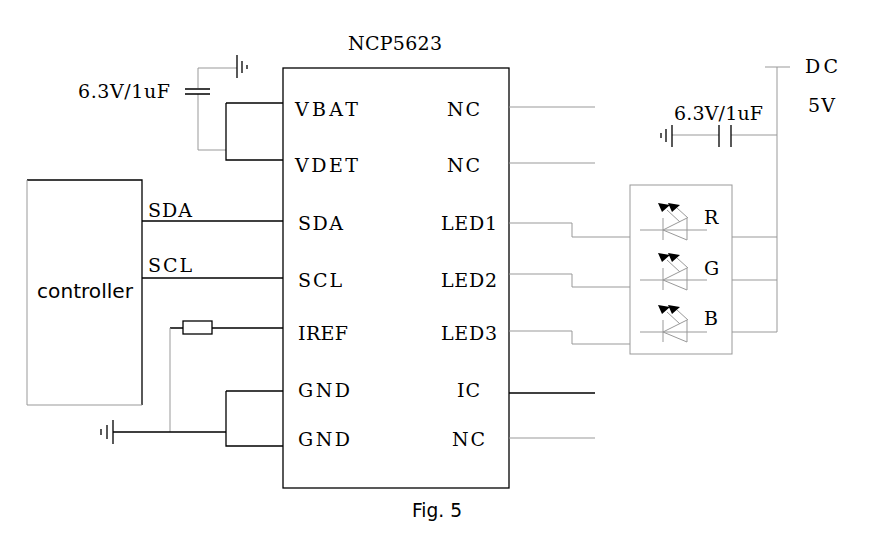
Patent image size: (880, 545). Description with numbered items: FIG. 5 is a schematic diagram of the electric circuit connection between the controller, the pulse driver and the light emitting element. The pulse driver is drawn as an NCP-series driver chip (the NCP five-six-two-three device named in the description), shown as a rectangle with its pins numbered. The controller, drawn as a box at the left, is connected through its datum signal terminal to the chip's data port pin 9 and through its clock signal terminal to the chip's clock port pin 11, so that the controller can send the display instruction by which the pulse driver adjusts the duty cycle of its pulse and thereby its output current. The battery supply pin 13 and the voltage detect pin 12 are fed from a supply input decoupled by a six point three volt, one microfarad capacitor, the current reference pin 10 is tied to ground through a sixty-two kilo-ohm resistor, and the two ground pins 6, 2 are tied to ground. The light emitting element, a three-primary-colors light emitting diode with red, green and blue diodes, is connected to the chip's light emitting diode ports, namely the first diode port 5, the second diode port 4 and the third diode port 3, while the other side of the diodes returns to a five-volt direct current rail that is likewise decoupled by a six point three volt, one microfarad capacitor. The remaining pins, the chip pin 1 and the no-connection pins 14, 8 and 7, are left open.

The IC pin 1 is at (552, 380).
The GND pin / LED G pin 2 is at (423, 356).
The LED3 pin 3 is at (569, 324).
The LED2 pin 4 is at (569, 267).
The LED1 pin / LED B pin 5 is at (569, 268).
The GND pin / LED R pin 6 is at (423, 302).
The NC pin 7 is at (552, 426).
The NC pin 8 is at (552, 150).
The SDA pin 9 is at (212, 211).
The IREF pin with 62K ohm resistor 10 is at (226, 362).
The SCL pin 11 is at (212, 268).
The VDET pin 12 is at (254, 132).
The VBAT pin 13 is at (254, 93).
The NC pin 14 is at (552, 93).